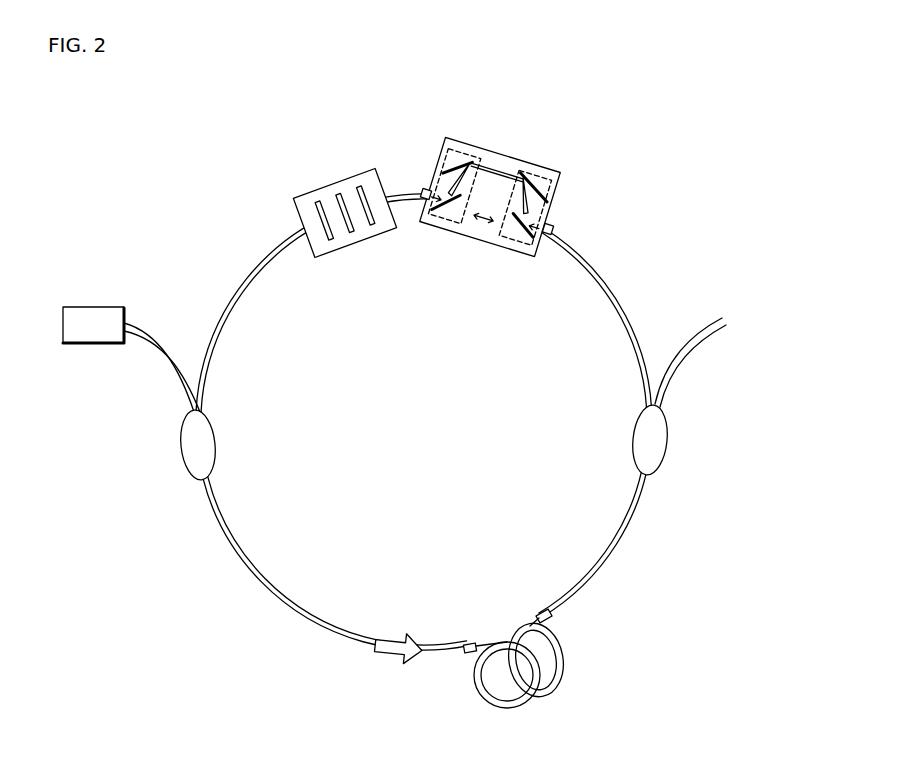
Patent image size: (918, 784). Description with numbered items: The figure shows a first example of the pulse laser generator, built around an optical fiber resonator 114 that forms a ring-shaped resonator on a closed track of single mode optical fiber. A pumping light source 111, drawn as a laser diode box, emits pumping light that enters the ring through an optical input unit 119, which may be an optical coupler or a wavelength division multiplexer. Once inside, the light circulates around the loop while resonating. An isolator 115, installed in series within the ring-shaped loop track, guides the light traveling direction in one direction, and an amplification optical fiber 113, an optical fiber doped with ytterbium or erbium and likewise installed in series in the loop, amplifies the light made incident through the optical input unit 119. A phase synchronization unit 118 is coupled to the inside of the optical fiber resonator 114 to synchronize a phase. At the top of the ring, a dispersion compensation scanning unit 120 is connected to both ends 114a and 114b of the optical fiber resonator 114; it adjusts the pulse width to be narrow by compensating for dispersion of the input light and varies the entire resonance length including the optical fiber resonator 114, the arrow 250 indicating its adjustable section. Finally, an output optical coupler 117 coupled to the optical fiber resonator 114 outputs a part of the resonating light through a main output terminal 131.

The pumping light source 111 is at (93, 305).
The amplification optical fiber 113 is at (477, 655).
The optical fiber resonator 114 is at (243, 277).
The end of the optical fiber resonator 114a is at (553, 227).
The end of the optical fiber resonator 114b is at (425, 188).
The isolator 115 is at (385, 650).
The output optical coupler 117 is at (657, 445).
The phase synchronization unit 118 is at (322, 192).
The optical input unit 119 is at (190, 444).
The dispersion compensation scanning unit 120 is at (503, 152).
The main output terminal 131 is at (678, 355).
The optical path 250 is at (459, 256).